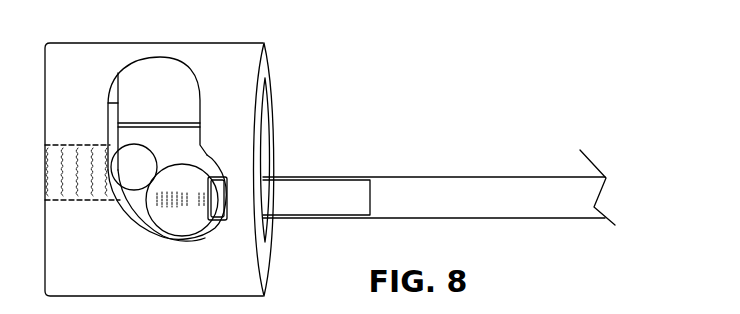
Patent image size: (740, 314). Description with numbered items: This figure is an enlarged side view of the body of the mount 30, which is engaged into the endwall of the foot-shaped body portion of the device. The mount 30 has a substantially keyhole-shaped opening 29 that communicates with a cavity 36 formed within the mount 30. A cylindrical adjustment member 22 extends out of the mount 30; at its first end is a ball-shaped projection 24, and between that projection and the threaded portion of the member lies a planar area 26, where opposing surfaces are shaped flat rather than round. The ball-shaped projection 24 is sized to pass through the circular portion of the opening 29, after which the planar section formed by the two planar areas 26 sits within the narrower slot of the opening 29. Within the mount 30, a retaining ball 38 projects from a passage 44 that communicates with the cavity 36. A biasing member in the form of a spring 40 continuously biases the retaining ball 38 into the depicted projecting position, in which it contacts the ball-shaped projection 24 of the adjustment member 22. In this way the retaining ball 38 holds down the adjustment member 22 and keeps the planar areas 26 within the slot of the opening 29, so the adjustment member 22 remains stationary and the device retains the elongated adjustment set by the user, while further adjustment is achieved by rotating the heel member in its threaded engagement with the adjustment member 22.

The adjustment member 22 is at (462, 178).
The ball-shaped projection 24 is at (183, 220).
The planar area 26 is at (310, 198).
The keyhole-shaped opening 29 is at (267, 140).
The mount 30 is at (218, 68).
The cavity 36 is at (160, 78).
The retaining ball 38 is at (140, 177).
The spring 40 is at (91, 178).
The passage 44 is at (44, 226).